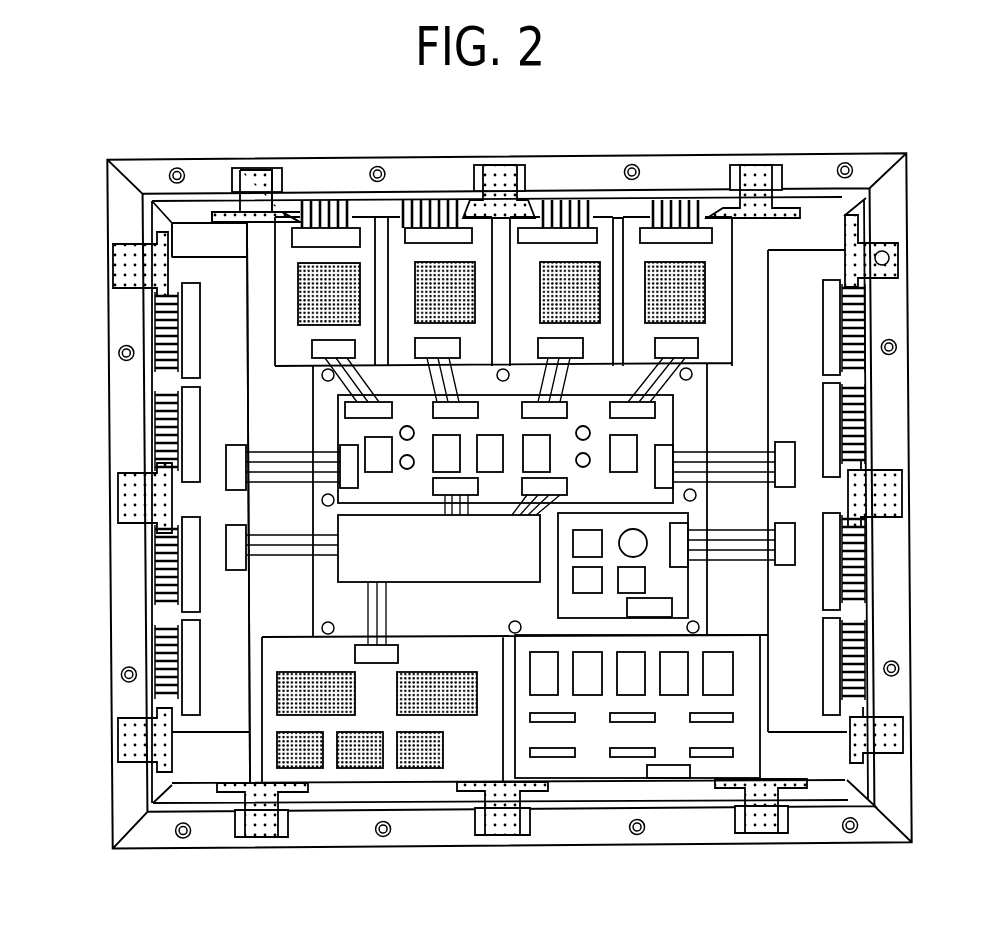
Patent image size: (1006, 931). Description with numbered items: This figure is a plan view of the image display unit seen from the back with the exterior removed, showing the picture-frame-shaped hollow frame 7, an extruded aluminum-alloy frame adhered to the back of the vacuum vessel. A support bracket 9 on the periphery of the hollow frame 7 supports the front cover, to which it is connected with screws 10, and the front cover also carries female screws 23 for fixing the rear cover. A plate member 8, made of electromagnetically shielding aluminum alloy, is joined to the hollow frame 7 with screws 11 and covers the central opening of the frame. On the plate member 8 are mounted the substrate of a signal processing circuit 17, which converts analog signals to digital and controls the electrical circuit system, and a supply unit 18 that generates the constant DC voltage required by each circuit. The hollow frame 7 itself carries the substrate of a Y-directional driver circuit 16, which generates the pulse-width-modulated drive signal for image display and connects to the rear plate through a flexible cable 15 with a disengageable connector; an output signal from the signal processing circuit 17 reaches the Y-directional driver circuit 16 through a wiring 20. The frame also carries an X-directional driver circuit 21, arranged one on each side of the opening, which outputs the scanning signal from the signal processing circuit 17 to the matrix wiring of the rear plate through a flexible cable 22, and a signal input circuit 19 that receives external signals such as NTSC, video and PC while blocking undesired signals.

The hollow frame 7 is at (203, 240).
The plate member 8 is at (327, 606).
The support bracket 9 is at (165, 289).
The screws 10 is at (890, 258).
The screws 11 is at (510, 634).
The flexible cable 15 is at (328, 214).
The Y-directional driver circuit 16 is at (708, 277).
The signal processing circuit 17 is at (590, 432).
The supply unit 18 is at (440, 562).
The signal input circuit 19 is at (277, 702).
The wiring 20 is at (672, 378).
The X-directional driver circuit 21 is at (222, 405).
The flexible cable 22 is at (162, 443).
The female screws 23 is at (899, 668).